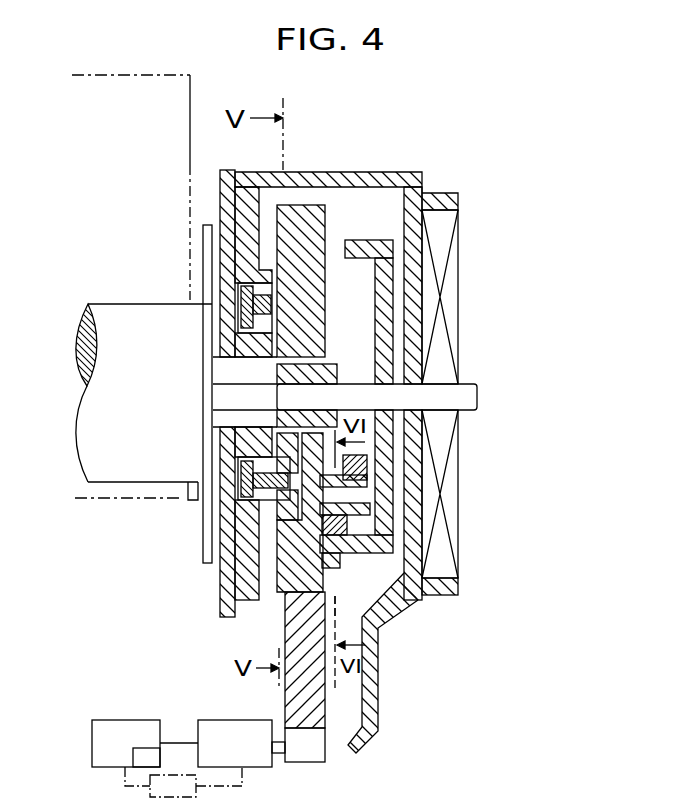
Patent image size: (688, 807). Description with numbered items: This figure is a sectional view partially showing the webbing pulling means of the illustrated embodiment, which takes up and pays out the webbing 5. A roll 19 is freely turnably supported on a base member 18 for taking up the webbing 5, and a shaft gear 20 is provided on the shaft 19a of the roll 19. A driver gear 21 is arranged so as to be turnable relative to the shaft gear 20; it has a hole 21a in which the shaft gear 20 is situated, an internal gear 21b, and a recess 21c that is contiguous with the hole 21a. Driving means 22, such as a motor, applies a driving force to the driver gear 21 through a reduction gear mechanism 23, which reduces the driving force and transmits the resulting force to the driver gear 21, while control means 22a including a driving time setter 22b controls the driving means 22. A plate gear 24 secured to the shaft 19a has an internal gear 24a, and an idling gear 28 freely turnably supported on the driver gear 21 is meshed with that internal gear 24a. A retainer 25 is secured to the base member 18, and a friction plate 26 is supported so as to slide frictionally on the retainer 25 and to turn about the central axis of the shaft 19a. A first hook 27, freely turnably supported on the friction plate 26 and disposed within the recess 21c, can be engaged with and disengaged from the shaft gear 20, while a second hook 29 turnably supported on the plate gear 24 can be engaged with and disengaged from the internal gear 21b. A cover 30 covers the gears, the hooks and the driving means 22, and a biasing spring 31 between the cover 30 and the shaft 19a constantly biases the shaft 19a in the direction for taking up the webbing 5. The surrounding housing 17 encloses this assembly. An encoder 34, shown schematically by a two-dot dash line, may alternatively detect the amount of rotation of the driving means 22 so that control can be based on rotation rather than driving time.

The webbing 5 is at (122, 130).
The housing 17 is at (432, 165).
The base member 18 is at (207, 565).
The roll 19 is at (106, 462).
The shaft 19a is at (462, 402).
The shaft gear 20 is at (300, 378).
The driver gear 21 is at (285, 570).
The hole 21a is at (216, 383).
The internal gear 21b is at (331, 213).
The recess 21c is at (272, 502).
The driving means 22 is at (220, 742).
The control means 22a is at (120, 742).
The driving time setter 22b is at (142, 756).
The reduction gear mechanism 23 is at (333, 693).
The plate gear 24 is at (403, 283).
The internal gear 24a is at (356, 252).
The retainer 25 is at (250, 212).
The friction plate 26 is at (255, 305).
The first hook 27 is at (272, 455).
The idling gear 28 is at (350, 537).
The second hook 29 is at (346, 565).
The cover 30 is at (394, 622).
The biasing spring 31 is at (450, 329).
The encoder 34 is at (150, 793).